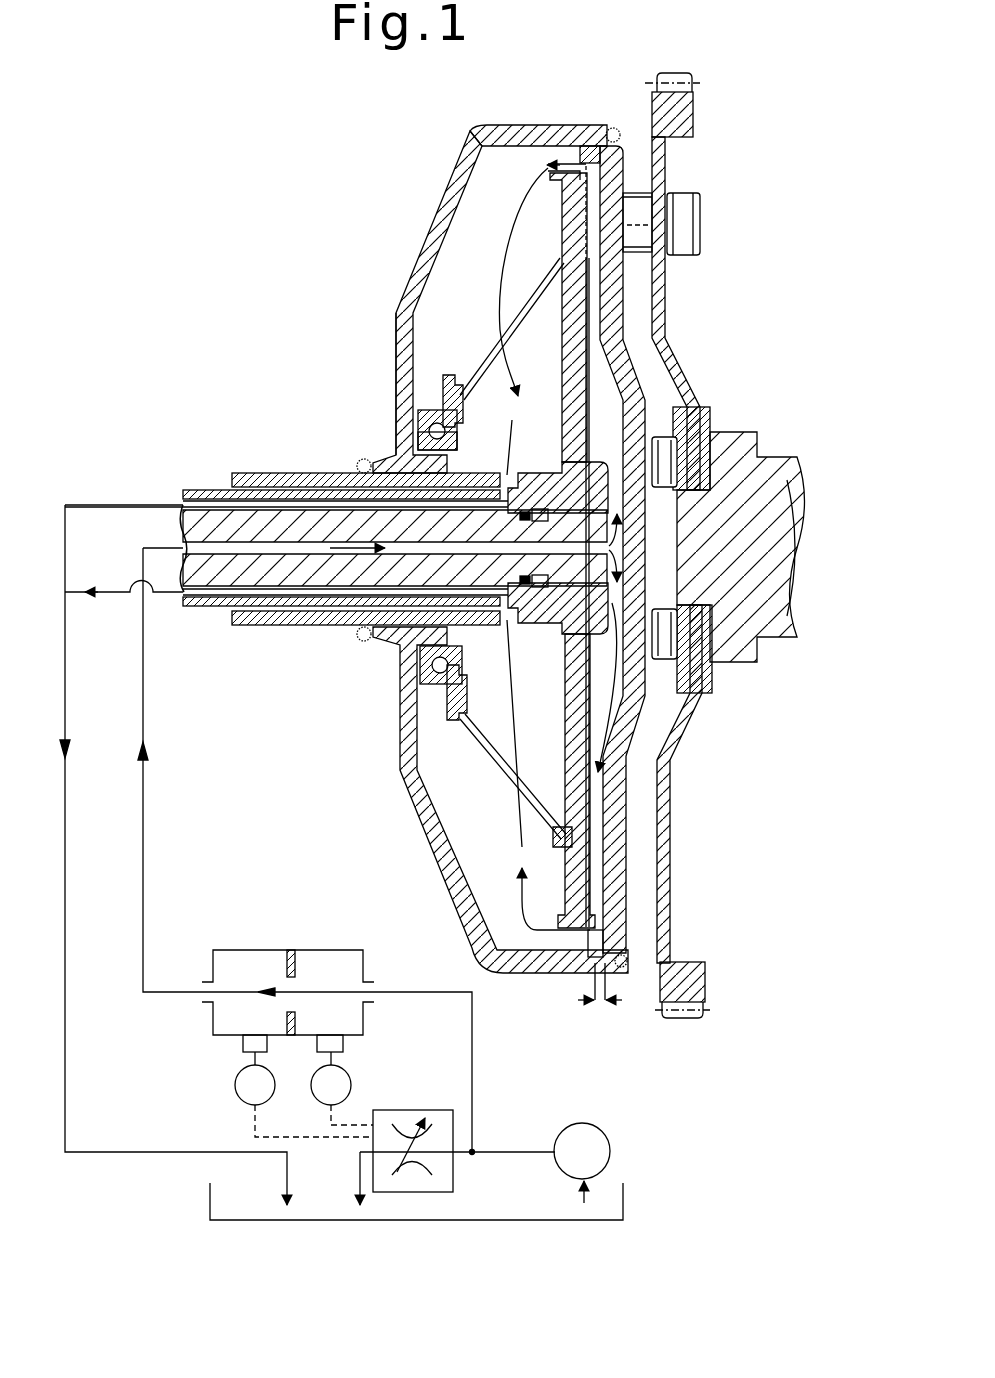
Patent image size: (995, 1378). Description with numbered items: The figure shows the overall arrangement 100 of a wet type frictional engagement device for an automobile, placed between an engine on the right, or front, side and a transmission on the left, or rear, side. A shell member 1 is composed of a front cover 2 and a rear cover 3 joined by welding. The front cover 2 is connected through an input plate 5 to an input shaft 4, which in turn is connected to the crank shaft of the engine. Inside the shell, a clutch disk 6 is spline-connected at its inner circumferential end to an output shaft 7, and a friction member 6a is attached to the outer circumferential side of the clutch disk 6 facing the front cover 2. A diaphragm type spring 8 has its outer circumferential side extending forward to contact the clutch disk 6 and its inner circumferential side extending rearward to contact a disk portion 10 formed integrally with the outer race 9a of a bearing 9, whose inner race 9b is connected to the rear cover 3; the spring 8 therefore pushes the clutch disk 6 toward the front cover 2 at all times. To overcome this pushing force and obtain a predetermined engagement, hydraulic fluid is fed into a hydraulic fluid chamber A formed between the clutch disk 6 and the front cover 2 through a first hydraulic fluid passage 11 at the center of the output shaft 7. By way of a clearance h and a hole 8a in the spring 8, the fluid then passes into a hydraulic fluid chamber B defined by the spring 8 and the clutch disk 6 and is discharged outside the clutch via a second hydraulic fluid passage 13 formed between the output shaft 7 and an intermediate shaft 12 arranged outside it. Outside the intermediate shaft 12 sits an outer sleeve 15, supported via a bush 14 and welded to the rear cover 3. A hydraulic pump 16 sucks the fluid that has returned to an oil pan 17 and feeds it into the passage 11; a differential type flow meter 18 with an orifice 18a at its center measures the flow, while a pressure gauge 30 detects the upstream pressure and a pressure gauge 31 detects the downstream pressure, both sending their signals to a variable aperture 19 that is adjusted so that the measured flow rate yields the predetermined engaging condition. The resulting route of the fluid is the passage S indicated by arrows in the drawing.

The wet type frictional engagement device 100 is at (501, 517).
The shell member 1 is at (540, 125).
The front cover 2 is at (614, 163).
The rear cover 3 is at (453, 185).
The input shaft 4 is at (727, 432).
The input plate 5 is at (660, 297).
The clutch disk 6 is at (638, 552).
The friction member 6a is at (588, 207).
The output shaft 7 is at (218, 520).
The diaphragm type spring 8 is at (497, 330).
The hole 8a is at (500, 753).
The bearing 9 is at (420, 397).
The outer race 9a is at (397, 320).
The inner race 9b is at (418, 447).
The disk portion 10 is at (452, 373).
The first hydraulic fluid passage 11 is at (178, 547).
The intermediate shaft 12 is at (267, 494).
The second hydraulic fluid passage 13 is at (315, 506).
The bush 14 is at (480, 480).
The outer sleeve 15 is at (331, 477).
The hydraulic pump 16 is at (600, 1143).
The oil pan 17 is at (627, 1203).
The flow meter 18 is at (321, 951).
The orifice 18a is at (295, 966).
The variable aperture 19 is at (410, 1110).
The pressure gauge 30 is at (352, 1082).
The pressure gauge 31 is at (236, 1084).
The hydraulic fluid chamber A is at (628, 400).
The hydraulic fluid chamber B is at (537, 762).
The passage S is at (300, 546).
The clearance h is at (600, 998).